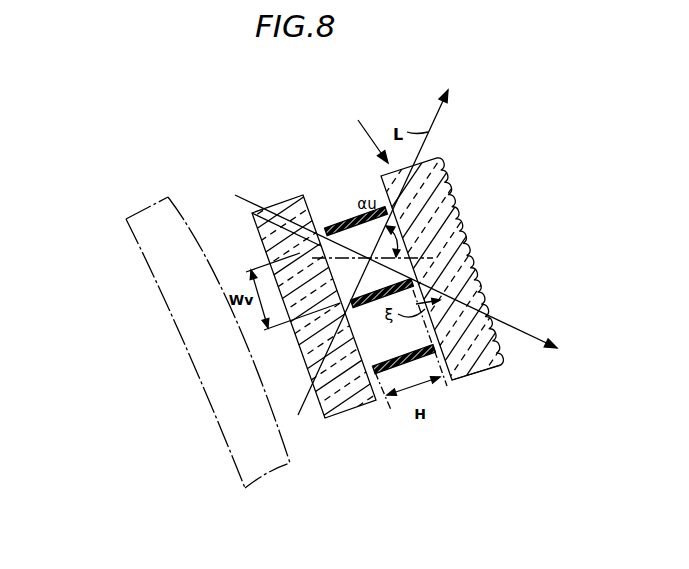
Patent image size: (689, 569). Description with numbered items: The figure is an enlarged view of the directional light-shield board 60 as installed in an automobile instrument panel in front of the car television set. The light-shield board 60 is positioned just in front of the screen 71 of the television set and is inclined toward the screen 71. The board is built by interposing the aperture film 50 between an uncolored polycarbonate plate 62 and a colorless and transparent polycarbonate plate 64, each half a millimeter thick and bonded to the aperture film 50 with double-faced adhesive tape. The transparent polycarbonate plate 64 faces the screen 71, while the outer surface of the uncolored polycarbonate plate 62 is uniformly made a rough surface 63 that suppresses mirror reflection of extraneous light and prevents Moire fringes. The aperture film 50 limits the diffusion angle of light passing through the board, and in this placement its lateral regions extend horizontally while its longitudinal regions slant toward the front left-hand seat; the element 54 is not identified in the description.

The screen 71 is at (209, 253).
The colorless and transparent polycarbonate plate 64 is at (289, 212).
The aperture film 50 is at (350, 222).
The rough surface 63 is at (483, 289).
The uncolored polycarbonate plate 62 is at (496, 366).
The track portion 54 is at (376, 342).
The directional light-shield board 60 is at (361, 129).